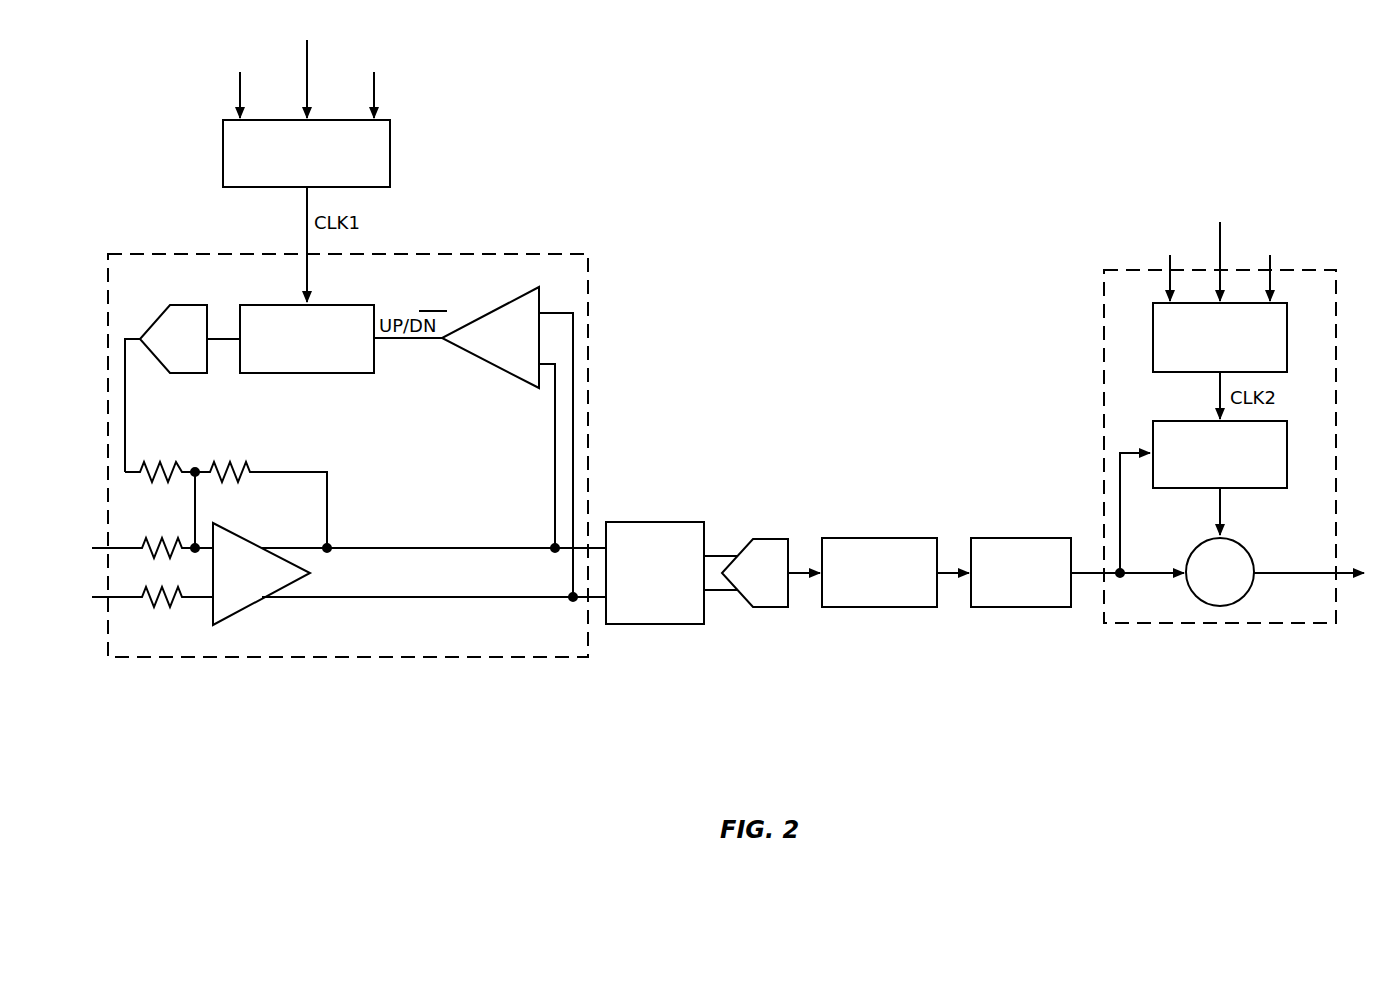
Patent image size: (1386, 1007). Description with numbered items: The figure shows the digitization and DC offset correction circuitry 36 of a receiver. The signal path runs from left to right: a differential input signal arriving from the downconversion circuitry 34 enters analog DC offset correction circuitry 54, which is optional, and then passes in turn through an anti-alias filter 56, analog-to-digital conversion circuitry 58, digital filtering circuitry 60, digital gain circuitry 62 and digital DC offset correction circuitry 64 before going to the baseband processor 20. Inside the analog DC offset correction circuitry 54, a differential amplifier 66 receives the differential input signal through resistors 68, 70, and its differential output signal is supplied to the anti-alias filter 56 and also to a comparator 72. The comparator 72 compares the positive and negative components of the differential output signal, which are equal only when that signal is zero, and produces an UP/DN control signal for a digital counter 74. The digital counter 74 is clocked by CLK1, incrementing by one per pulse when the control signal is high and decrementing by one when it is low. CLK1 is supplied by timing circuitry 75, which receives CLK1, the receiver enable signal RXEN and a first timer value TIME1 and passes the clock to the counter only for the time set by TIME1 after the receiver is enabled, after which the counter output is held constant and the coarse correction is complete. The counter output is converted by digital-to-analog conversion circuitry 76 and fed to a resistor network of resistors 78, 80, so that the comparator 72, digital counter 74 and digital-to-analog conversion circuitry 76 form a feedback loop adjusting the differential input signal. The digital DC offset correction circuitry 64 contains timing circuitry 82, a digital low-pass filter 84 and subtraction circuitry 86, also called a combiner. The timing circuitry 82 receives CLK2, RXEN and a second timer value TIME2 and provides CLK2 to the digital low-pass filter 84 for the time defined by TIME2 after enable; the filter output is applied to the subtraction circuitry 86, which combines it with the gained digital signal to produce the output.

The baseband processor 20 is at (1366, 582).
The downconversion circuitry 34 is at (93, 585).
The digitization and DC offset correction circuitry 36 is at (968, 292).
The analog DC offset correction circuitry 54 is at (522, 254).
The anti-alias filter 56 is at (646, 522).
The analog-to-digital conversion circuitry 58 is at (770, 539).
The digital filtering circuitry 60 is at (905, 538).
The digital gain circuitry 62 is at (1040, 538).
The digital DC offset correction circuitry 64 is at (1320, 270).
The differential amplifier 66 is at (226, 622).
The resistor 68 is at (172, 545).
The resistor 70 is at (172, 596).
The comparator 72 is at (520, 298).
The digital counter 74 is at (322, 305).
The timing circuitry 75 is at (390, 148).
The digital-to-analog conversion circuitry 76 is at (190, 305).
The resistor 78 is at (146, 470).
The resistor 80 is at (216, 470).
The timing circuitry 82 is at (1278, 303).
The digital low-pass filter 84 is at (1278, 421).
The subtraction circuitry 86 is at (1252, 555).